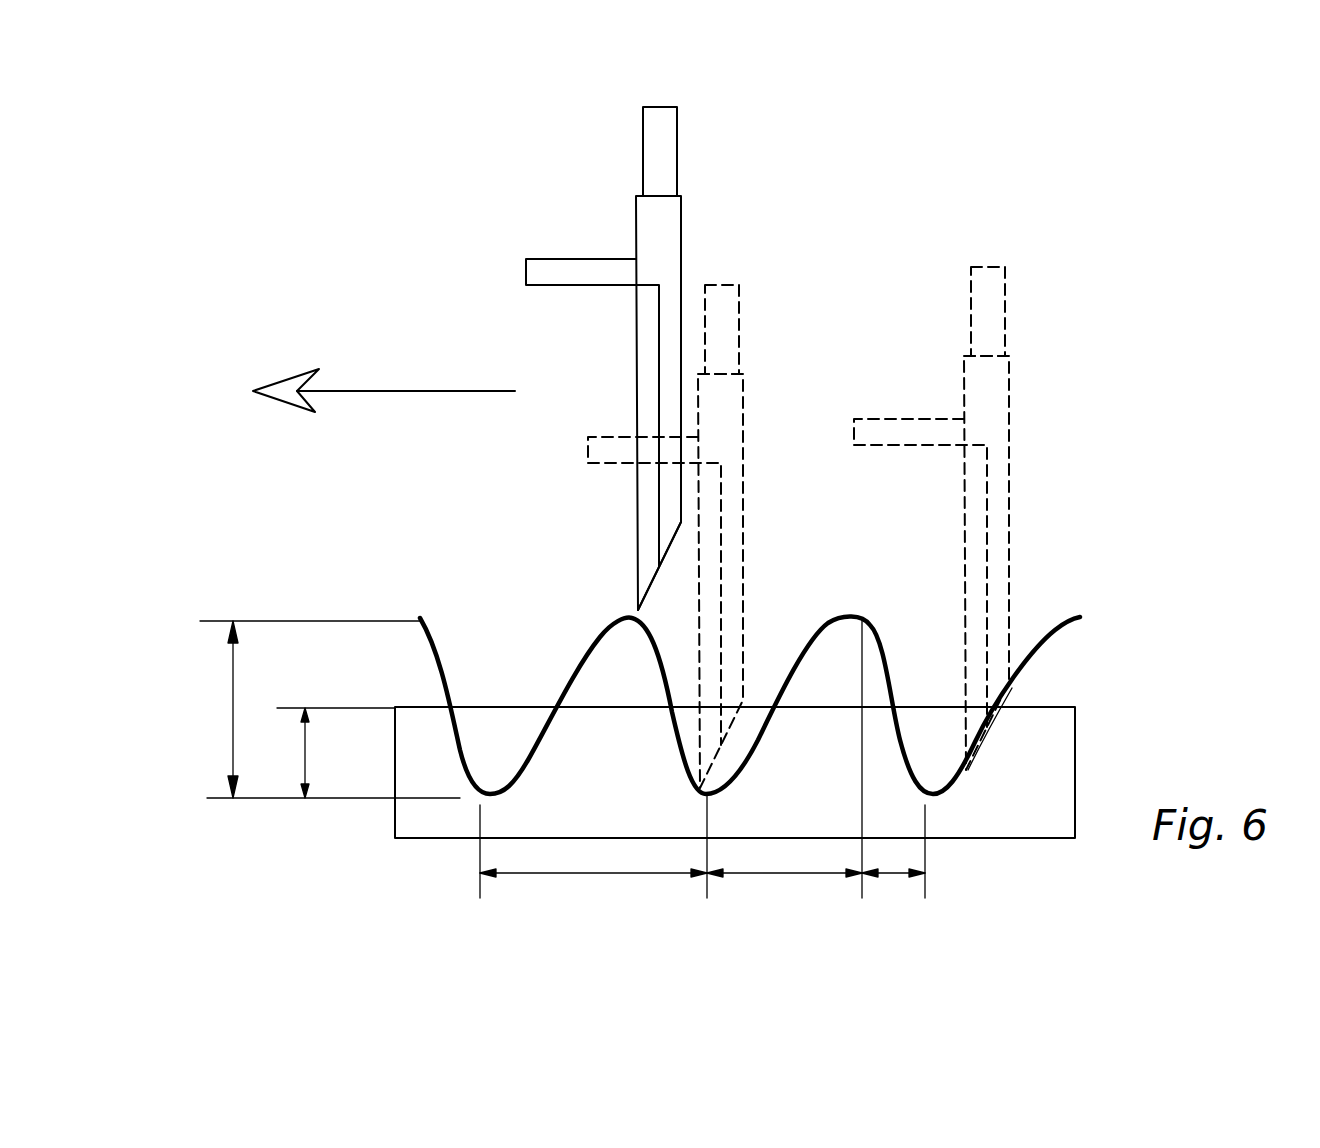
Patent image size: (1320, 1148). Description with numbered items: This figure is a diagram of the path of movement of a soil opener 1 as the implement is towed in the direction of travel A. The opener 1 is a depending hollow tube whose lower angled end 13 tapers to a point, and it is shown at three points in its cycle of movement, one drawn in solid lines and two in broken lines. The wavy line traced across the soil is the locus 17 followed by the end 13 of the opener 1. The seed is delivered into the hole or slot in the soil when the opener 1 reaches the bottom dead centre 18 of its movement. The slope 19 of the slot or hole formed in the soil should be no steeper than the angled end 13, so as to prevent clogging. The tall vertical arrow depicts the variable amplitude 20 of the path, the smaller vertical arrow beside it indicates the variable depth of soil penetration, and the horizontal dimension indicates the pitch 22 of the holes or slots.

The soil opener 1 is at (968, 372).
The lower angled end 13 is at (656, 578).
The locus 17 is at (1068, 617).
The bottom dead centre 18 is at (733, 756).
The slope 19 is at (1012, 688).
The variable amplitude 20 is at (233, 715).
The pitch 22 is at (613, 874).
The direction of travel A is at (438, 391).